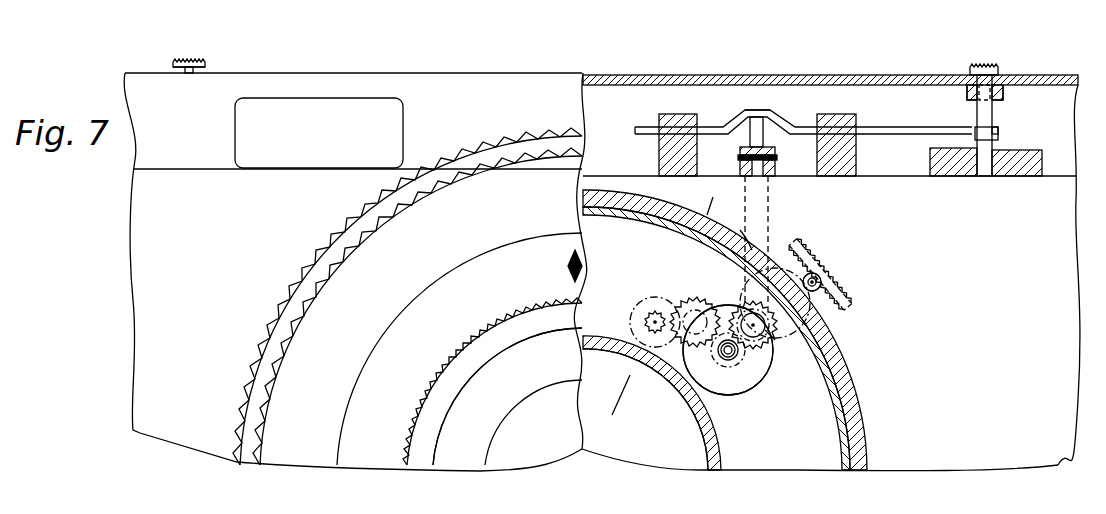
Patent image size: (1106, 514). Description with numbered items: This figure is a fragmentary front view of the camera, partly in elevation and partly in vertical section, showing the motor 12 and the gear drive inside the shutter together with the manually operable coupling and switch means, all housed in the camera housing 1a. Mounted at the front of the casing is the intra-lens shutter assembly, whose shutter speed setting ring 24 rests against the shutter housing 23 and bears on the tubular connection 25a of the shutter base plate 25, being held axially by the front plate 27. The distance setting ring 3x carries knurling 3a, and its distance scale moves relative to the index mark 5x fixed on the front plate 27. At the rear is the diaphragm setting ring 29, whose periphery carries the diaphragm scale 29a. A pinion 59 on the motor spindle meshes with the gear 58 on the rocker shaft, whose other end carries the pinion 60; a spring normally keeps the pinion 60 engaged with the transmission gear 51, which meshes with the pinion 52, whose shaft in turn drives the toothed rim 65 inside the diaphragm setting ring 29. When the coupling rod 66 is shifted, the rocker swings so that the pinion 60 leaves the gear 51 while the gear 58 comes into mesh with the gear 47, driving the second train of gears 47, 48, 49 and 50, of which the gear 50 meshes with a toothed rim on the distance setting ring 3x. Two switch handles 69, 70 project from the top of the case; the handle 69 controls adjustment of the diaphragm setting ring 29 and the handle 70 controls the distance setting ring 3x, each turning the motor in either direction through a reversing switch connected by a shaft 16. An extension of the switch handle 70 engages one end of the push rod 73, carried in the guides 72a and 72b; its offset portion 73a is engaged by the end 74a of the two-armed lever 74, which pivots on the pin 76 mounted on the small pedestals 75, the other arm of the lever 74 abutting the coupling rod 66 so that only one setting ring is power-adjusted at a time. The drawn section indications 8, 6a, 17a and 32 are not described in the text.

The camera housing 1a is at (155, 240).
The knurling 3a is at (422, 398).
The distance setting ring 3x is at (423, 463).
The index mark 5x is at (568, 267).
The shaft 6a is at (821, 290).
The section line 8 is at (708, 203).
The motor 12 is at (728, 393).
The shaft 16 is at (205, 70).
The block 17a is at (1035, 150).
The shutter housing 23 is at (832, 385).
The shutter speed setting ring 24 is at (310, 452).
The shutter base plate 25 is at (780, 463).
The tubular connection 25a is at (712, 470).
The front plate 27 is at (383, 452).
The diaphragm setting ring 29 is at (257, 377).
The diaphragm scale 29a is at (287, 338).
The outer ring wall 32 is at (860, 425).
The gear 47 is at (745, 302).
The gear 48 is at (690, 310).
The gear 49 is at (643, 297).
The gear 50 is at (647, 322).
The transmission gear 51 is at (810, 310).
The pinion 52 is at (812, 282).
The gear 58 is at (772, 338).
The pinion 59 is at (733, 357).
The pinion 60 is at (735, 302).
The toothed rim 65 is at (792, 250).
The coupling rod 66 is at (745, 232).
The switch handle 69 is at (180, 60).
The switch handle 70 is at (996, 69).
The guide 72a is at (857, 157).
The guide 72b is at (659, 150).
The push rod 73 is at (896, 128).
The offset portion 73a is at (762, 113).
The two-armed lever 74 is at (751, 142).
The lever end 74a is at (763, 137).
The pedestals 75 is at (767, 170).
The pin 76 is at (777, 158).